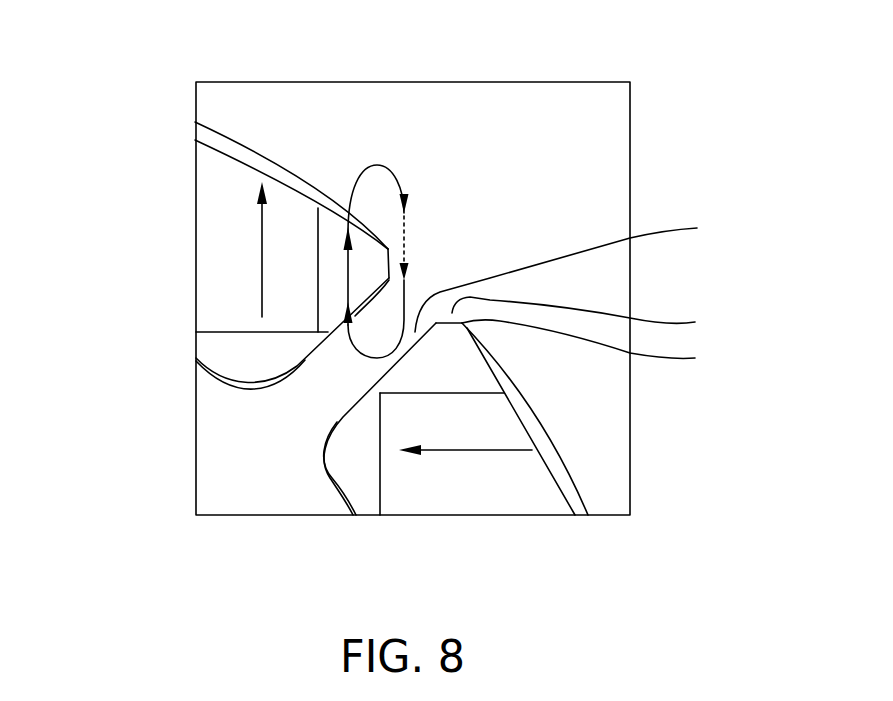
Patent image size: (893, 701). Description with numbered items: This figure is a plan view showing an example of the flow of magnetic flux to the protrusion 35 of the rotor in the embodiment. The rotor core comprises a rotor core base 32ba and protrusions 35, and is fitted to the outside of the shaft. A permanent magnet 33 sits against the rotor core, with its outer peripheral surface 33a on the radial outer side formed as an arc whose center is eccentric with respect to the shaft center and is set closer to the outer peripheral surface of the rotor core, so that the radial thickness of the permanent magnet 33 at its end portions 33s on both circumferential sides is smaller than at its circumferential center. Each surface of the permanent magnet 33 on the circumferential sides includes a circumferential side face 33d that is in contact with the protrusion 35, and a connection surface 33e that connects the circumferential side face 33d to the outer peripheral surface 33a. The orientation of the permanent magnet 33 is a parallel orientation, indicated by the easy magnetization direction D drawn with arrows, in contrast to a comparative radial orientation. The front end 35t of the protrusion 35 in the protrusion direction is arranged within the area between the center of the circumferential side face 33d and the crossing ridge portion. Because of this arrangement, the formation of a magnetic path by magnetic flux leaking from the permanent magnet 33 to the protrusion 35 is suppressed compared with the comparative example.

The permanent magnet 33 is at (290, 213).
The outer peripheral surface 33a is at (263, 167).
The end portions 33s is at (378, 250).
The connection surface 33e is at (400, 262).
The circumferential side face 33d is at (393, 280).
The protrusion 35 is at (372, 333).
The front end of the protrusion 35t is at (408, 312).
The rotor core base 32ba is at (236, 473).
The easy magnetization direction D is at (262, 262).